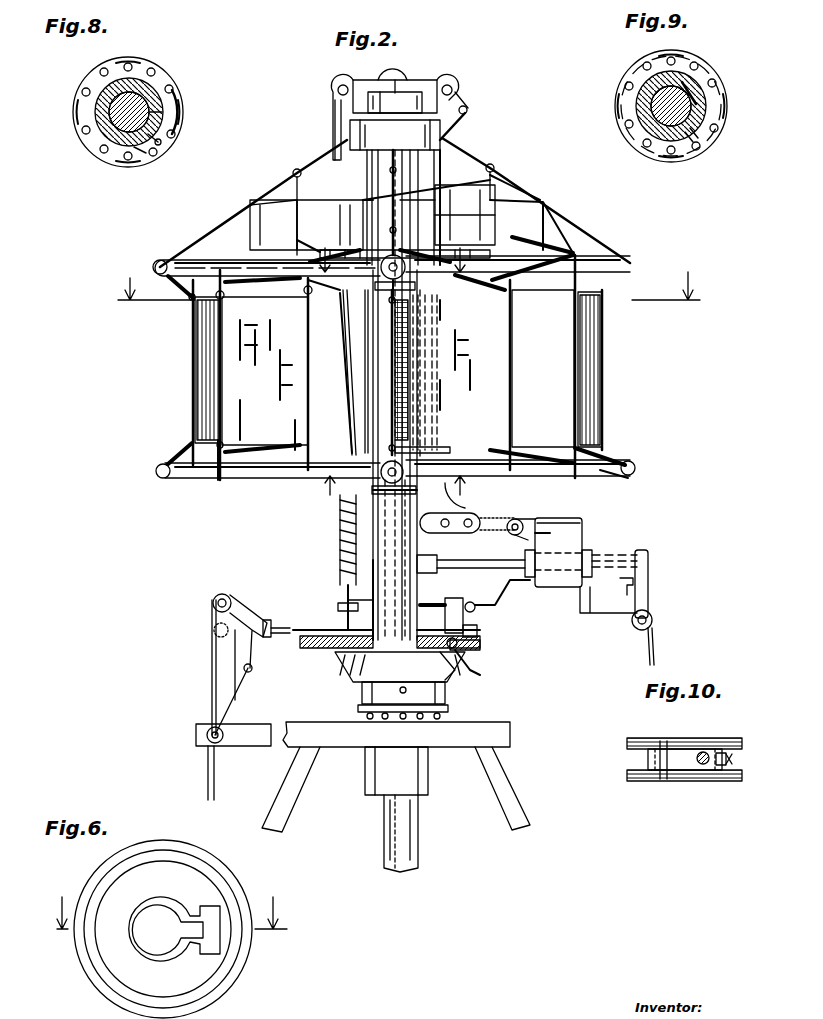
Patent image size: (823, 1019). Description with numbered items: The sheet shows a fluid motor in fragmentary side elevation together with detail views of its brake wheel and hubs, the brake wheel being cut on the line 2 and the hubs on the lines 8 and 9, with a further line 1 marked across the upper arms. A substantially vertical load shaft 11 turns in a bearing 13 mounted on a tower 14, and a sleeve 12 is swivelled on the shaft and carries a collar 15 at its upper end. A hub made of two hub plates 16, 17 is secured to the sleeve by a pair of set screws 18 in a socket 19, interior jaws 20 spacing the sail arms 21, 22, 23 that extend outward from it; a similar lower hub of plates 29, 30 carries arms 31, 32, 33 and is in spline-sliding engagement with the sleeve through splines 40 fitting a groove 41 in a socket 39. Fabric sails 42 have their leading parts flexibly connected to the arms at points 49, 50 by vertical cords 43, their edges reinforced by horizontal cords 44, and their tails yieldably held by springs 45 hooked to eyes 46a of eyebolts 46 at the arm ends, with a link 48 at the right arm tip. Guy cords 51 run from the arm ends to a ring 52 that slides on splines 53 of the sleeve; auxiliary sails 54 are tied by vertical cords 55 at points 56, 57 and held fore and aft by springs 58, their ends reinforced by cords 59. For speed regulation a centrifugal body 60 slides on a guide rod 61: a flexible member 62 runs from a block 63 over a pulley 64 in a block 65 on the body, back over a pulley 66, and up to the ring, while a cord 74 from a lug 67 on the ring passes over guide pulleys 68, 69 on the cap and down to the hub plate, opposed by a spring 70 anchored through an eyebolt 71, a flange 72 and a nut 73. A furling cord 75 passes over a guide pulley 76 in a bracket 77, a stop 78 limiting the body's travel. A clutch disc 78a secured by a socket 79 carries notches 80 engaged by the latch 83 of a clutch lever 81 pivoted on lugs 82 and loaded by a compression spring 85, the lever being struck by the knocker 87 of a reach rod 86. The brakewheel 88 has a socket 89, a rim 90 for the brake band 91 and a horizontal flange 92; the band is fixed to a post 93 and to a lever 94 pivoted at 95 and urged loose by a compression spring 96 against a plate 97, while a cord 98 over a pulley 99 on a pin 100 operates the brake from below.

In FIG. 2, the section line 1— 1 is at (413, 286).
In FIG. 6, the section line 2— 2 is at (169, 917).
In FIG. 2, the section line 8— 8 is at (391, 253).
In FIG. 2, the section line 9— 9 is at (393, 493).
In FIG. 8, the load shaft 11 is at (136, 98).
In FIG. 9, the load shaft 11 is at (678, 92).
In FIG. 2, the load shaft 11 is at (428, 806).
In FIG. 8, the sleeve 12 is at (150, 105).
In FIG. 9, the sleeve 12 is at (692, 98).
In FIG. 2, the sleeve 12 is at (372, 185).
In FIG. 2, the bearing 13 is at (365, 766).
In FIG. 2, the tower 14 is at (396, 734).
In FIG. 2, the collar 15 is at (395, 91).
In FIG. 8, the hub plate 16 is at (84, 92).
In FIG. 10, the hub plate 16 is at (678, 770).
In FIG. 2, the hub plate 16 is at (414, 283).
In FIG. 10, the hub plate 17 is at (688, 740).
In FIG. 2, the hub plate 17 is at (447, 250).
In FIG. 8, the set screws 18 is at (176, 131).
In FIG. 10, the set screws 18 is at (733, 758).
In FIG. 8, the socket 19 is at (144, 154).
In FIG. 10, the socket 19 is at (705, 765).
In FIG. 8, the jaws or projections 20 is at (176, 100).
In FIG. 9, the jaws or projections 20 is at (612, 100).
In FIG. 10, the jaws or projections 20 is at (655, 750).
In FIG. 2, the sail arm 21 is at (255, 276).
In FIG. 2, the sail arm 22 is at (340, 315).
In FIG. 2, the sail arm 23 is at (505, 272).
In FIG. 2, the hub plate 29 is at (466, 505).
In FIG. 9, the hub plate 30 is at (715, 88).
In FIG. 2, the hub plate 30 is at (452, 457).
In FIG. 2, the sail arm 31 is at (248, 480).
In FIG. 2, the sail arm 32 is at (395, 503).
In FIG. 2, the sail arm 33 is at (516, 476).
In FIG. 9, the socket 39 is at (716, 120).
In FIG. 9, the splines 40 is at (648, 108).
In FIG. 2, the splines 40 is at (352, 395).
In FIG. 9, the groove 41 is at (704, 92).
In FIG. 2, the groove 41 is at (428, 432).
In FIG. 2, the sails 42 is at (190, 357).
In FIG. 2, the vertical cords 43 is at (355, 343).
In FIG. 2, the horizontal cords 44 is at (478, 300).
In FIG. 2, the springs 45 is at (170, 288).
In FIG. 2, the eyebolts 46 is at (170, 480).
In FIG. 2, the eyes 46a is at (634, 462).
In FIG. 2, the link 48 is at (620, 480).
In FIG. 2, the connection points 49 is at (188, 280).
In FIG. 2, the connection points 50 is at (209, 460).
In FIG. 2, the guy-ropes or cords 51 is at (230, 220).
In FIG. 2, the ring 52 is at (391, 143).
In FIG. 2, the splines 53 is at (358, 191).
In FIG. 2, the auxiliary sails 54 is at (372, 217).
In FIG. 2, the vertical cords 55 is at (480, 175).
In FIG. 2, the connection points 56 is at (295, 247).
In FIG. 2, the connection points 57 is at (294, 172).
In FIG. 2, the springs 58 is at (565, 228).
In FIG. 2, the cords 59 is at (458, 185).
In FIG. 2, the centrifugal body 60 is at (567, 520).
In FIG. 2, the guide rod 61 is at (620, 533).
In FIG. 2, the flexible member 62 is at (441, 160).
In FIG. 2, the block 63 is at (420, 523).
In FIG. 2, the pulley 64 is at (520, 515).
In FIG. 2, the block 65 is at (546, 537).
In FIG. 2, the pulley 66 is at (471, 545).
In FIG. 2, the lug 67 is at (468, 113).
In FIG. 2, the guide pulley 68 is at (455, 78).
In FIG. 2, the guide pulley 69 is at (332, 78).
In FIG. 2, the spring 70 is at (335, 535).
In FIG. 2, the eyebolt 71 is at (330, 602).
In FIG. 2, the flange 72 is at (380, 590).
In FIG. 2, the nut 73 is at (335, 603).
In FIG. 2, the flexible member or cord 74 is at (332, 385).
In FIG. 2, the cord 75 is at (654, 640).
In FIG. 2, the guide pulley 76 is at (652, 615).
In FIG. 2, the bracket 77 is at (650, 560).
In FIG. 2, the stop 78 is at (619, 590).
In FIG. 2, the clutch disc 78a is at (447, 680).
In FIG. 2, the socket 79 is at (345, 660).
In FIG. 2, the notches 80 is at (340, 672).
In FIG. 2, the clutch lever 81 is at (455, 598).
In FIG. 2, the lugs 82 is at (482, 668).
In FIG. 2, the latch 83 is at (458, 648).
In FIG. 2, the compression spring 85 is at (440, 595).
In FIG. 2, the reach rod 86 is at (505, 600).
In FIG. 2, the head or knocker 87 is at (470, 600).
In FIG. 6, the brakewheel 88 is at (163, 929).
In FIG. 2, the brakewheel 88 is at (381, 647).
In FIG. 6, the socket 89 is at (186, 905).
In FIG. 6, the rim 90 is at (222, 892).
In FIG. 2, the rim 90 is at (320, 618).
In FIG. 2, the brake 91 is at (272, 618).
In FIG. 6, the horizontal flange 92 is at (182, 840).
In FIG. 2, the horizontal flange 92 is at (478, 648).
In FIG. 2, the post 93 is at (217, 592).
In FIG. 2, the lever 94 is at (262, 650).
In FIG. 2, the pivot 95 is at (212, 603).
In FIG. 2, the compression spring 96 is at (212, 665).
In FIG. 2, the plate 97 is at (255, 668).
In FIG. 2, the flexible member or cord 98 is at (214, 780).
In FIG. 2, the pulley 99 is at (218, 745).
In FIG. 2, the pin 100 is at (224, 735).